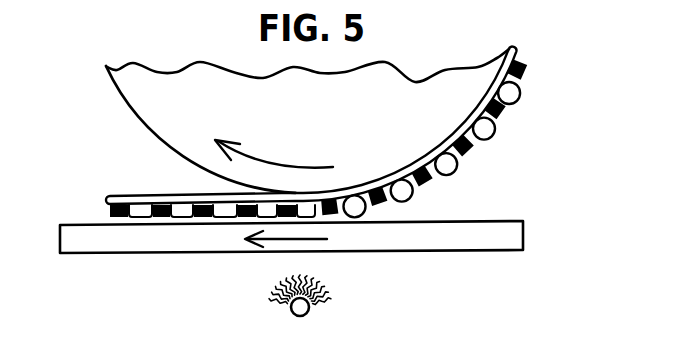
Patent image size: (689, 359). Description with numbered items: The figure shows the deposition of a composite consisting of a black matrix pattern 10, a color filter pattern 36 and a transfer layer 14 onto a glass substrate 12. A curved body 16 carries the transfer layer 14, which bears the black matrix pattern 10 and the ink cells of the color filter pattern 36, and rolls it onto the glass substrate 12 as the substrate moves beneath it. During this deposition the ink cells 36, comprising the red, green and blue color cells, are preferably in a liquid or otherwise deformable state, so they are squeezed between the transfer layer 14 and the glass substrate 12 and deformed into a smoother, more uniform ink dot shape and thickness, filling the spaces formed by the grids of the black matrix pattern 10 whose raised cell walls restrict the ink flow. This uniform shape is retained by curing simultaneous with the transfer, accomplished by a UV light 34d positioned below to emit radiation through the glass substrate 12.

The blanket 16 is at (133, 95).
The transfer layer 14 is at (446, 141).
The black matrix pattern 10 is at (462, 152).
The color filter pattern 36 is at (525, 96).
The glass substrate 12 is at (524, 233).
The UV light 34d is at (293, 313).